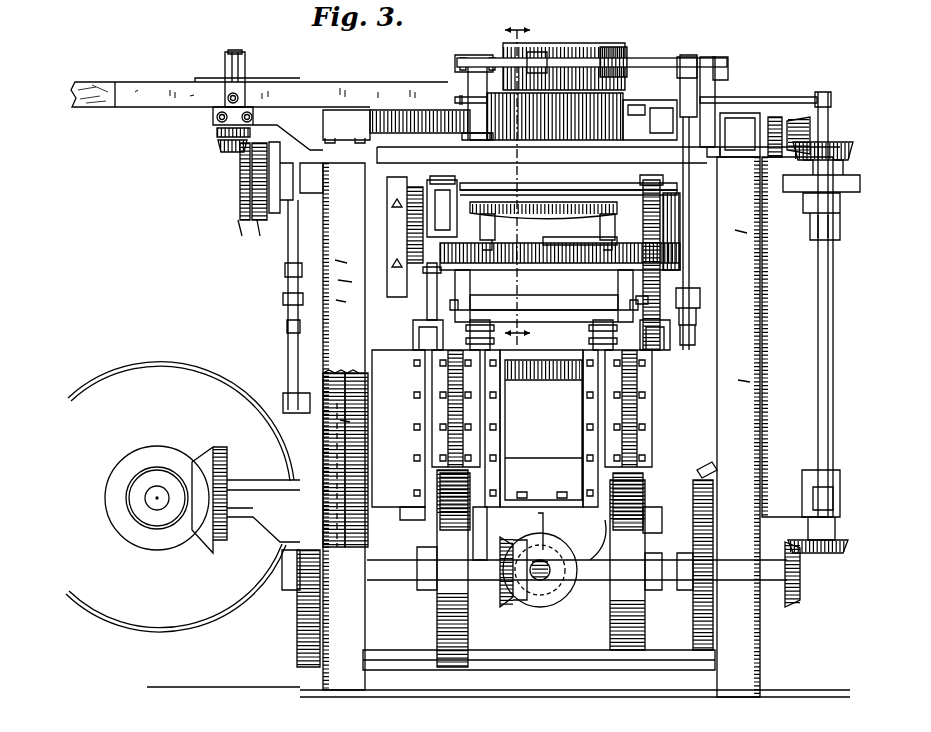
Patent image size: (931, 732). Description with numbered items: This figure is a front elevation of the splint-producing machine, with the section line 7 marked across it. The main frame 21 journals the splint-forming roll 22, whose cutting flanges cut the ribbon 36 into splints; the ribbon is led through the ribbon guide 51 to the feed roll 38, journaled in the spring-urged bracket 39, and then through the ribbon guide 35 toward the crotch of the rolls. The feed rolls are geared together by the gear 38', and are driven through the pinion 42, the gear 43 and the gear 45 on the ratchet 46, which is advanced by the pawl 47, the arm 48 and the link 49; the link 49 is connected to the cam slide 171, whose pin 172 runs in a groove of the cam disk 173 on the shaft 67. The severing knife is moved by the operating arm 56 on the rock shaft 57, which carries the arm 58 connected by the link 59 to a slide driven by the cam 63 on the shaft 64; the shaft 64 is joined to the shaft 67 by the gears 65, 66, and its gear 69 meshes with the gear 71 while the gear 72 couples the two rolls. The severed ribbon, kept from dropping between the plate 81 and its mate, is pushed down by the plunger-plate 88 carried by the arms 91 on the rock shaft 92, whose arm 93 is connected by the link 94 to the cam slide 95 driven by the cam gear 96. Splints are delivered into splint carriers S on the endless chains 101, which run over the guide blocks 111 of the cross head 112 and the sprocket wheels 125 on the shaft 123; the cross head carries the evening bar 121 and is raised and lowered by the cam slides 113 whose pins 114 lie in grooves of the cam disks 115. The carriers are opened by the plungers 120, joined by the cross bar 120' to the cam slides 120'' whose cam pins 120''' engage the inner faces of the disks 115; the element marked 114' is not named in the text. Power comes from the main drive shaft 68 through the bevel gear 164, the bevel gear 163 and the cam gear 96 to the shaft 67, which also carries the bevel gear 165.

The section line 7 is at (517, 183).
The main frame 21 is at (498, 427).
The splint-forming roll 22 is at (593, 133).
The ribbon guide 35 is at (300, 87).
The ribbon 36 is at (97, 101).
The feed roll 38 is at (268, 91).
The gear 38' is at (200, 138).
The bracket 39 is at (221, 78).
The pinion 42 is at (219, 148).
The gear 43 is at (240, 197).
The gear 45 is at (252, 230).
The ratchet 46 is at (262, 232).
The pawl 47 is at (268, 155).
The arm 48 is at (277, 228).
The link 49 is at (288, 341).
The ribbon guide 51 is at (143, 92).
The operating arm 56 is at (478, 90).
The rock shaft 57 is at (455, 97).
The arm 58 is at (829, 118).
The link 59 is at (823, 197).
The cam 63 is at (846, 182).
The shaft 64 is at (813, 357).
The gear 65 is at (828, 556).
The gear 66 is at (793, 600).
The shaft 67 is at (398, 582).
The main drive shaft 68 is at (158, 500).
The gear 69 is at (838, 143).
The gear 71 is at (796, 118).
The gear 72 is at (775, 153).
The plate 81 is at (630, 108).
The plunger-plate 88 is at (573, 50).
The arm 91 is at (537, 50).
The rock shaft 92 is at (668, 60).
The arm 93 is at (686, 60).
The link 94 is at (700, 284).
The cam slide 95 is at (707, 470).
The cam gear 96 is at (693, 630).
The endless chain 101 is at (440, 178).
The guide block 111 is at (413, 187).
The cross head 112 is at (570, 272).
The cam slide 113 is at (415, 518).
The pin 114 is at (438, 451).
The slotted bar 114' is at (613, 456).
The cam disk 115 is at (438, 598).
The plunger 120 is at (530, 292).
The cross bar 120' is at (544, 297).
The cam slide 120'' is at (541, 413).
The cam pin 120''' is at (535, 575).
The evening bar 121 is at (533, 202).
The shaft 123 is at (603, 245).
The sprocket wheel 125 is at (645, 304).
The bevel gear 163 is at (200, 463).
The bevel gear 164 is at (133, 543).
The bevel gear 165 is at (510, 600).
The cam slide 171 is at (323, 410).
The pin 172 is at (330, 478).
The cam disk 173 is at (305, 597).
The splint carrier S is at (557, 188).